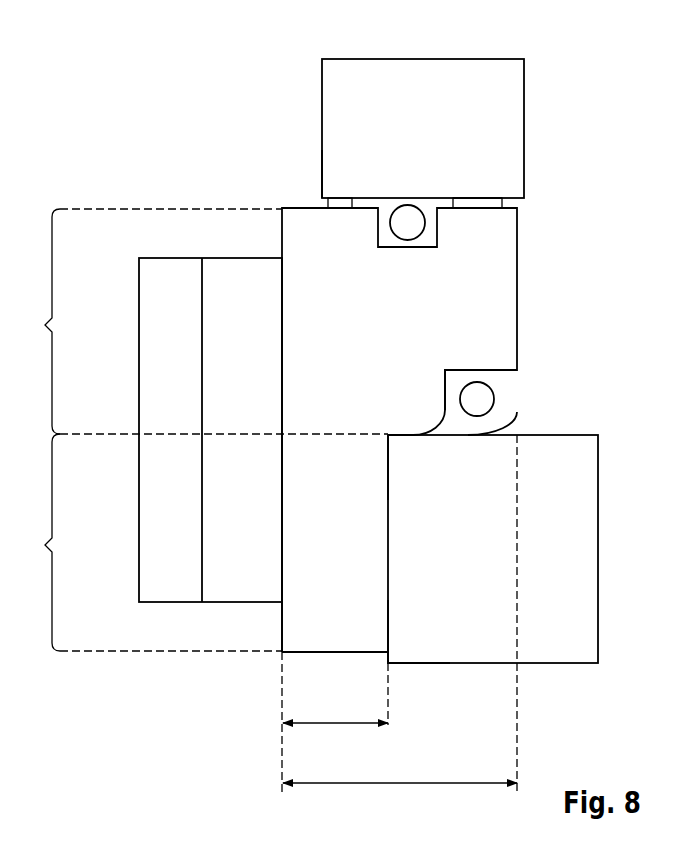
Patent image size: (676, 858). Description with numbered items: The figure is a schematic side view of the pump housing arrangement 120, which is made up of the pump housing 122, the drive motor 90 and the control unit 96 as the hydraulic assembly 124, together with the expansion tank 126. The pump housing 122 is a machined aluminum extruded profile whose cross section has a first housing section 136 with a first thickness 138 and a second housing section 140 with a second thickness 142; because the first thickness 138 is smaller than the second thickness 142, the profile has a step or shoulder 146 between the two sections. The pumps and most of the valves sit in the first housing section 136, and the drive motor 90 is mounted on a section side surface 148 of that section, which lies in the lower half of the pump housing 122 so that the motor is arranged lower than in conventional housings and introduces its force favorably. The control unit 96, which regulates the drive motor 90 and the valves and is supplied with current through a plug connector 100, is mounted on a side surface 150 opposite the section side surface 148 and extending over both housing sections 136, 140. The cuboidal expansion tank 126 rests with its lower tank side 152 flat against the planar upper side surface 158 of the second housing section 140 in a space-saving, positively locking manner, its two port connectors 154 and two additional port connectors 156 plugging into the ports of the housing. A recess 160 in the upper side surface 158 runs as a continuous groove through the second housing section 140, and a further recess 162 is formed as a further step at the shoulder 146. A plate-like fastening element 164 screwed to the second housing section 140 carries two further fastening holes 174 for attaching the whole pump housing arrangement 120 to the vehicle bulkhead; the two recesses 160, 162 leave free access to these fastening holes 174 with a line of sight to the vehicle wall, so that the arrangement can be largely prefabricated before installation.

The drive motor 90 is at (587, 551).
The control unit 96 is at (150, 372).
The plug connector 100 is at (220, 343).
The pump housing arrangement 120 is at (160, 63).
The pump housing 122 is at (302, 233).
The hydraulic assembly 124 is at (568, 316).
The expansion tank 126 is at (513, 83).
The first housing section 136 is at (35, 542).
The first thickness 138 is at (337, 725).
The second housing section 140 is at (35, 321).
The second thickness 142 is at (402, 787).
The shoulder 146 is at (398, 443).
The section side surface 148 is at (389, 632).
The side surface 150 is at (281, 628).
The lower tank side 152 is at (506, 201).
The port connectors 154 is at (483, 197).
The additional port connectors 156 is at (324, 178).
The upper side surface 158 is at (308, 208).
The recess 160 is at (431, 207).
The further recess 162 is at (449, 376).
The fastening element 164 is at (507, 393).
The further fastening holes 174 is at (403, 207).